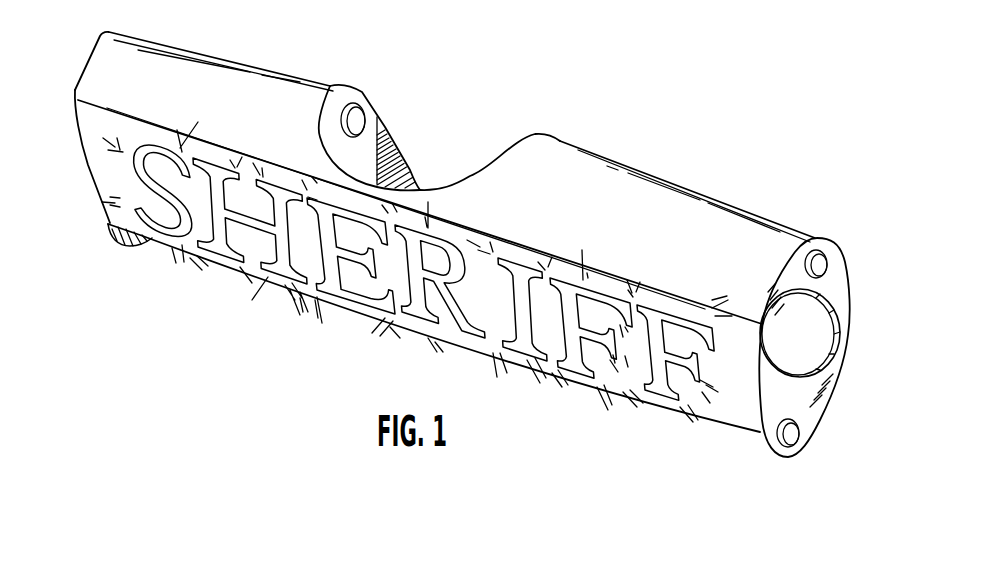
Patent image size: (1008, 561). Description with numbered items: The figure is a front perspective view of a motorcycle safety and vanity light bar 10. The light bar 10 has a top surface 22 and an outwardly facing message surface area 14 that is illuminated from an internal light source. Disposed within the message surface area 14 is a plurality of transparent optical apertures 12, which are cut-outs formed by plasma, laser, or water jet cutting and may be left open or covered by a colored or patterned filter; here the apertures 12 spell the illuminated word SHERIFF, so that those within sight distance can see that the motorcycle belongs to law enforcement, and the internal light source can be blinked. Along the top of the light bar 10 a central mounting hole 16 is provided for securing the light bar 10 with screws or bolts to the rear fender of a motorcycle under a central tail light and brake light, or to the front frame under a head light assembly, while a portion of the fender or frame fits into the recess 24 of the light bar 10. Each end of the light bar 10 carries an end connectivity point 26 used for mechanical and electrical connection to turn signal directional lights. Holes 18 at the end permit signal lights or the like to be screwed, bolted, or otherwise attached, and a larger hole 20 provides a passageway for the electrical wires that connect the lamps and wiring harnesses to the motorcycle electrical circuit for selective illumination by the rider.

The motorcycle safety and vanity light bar 10 is at (687, 126).
The transparent optical apertures 12 is at (215, 252).
The outwardly facing message surface area 14 is at (107, 183).
The central mounting hole 16 is at (355, 122).
The holes 18 is at (822, 263).
The hole 20 is at (819, 345).
The top surface 22 is at (270, 99).
The recess 24 is at (480, 135).
The end connectivity points 26 is at (137, 246).